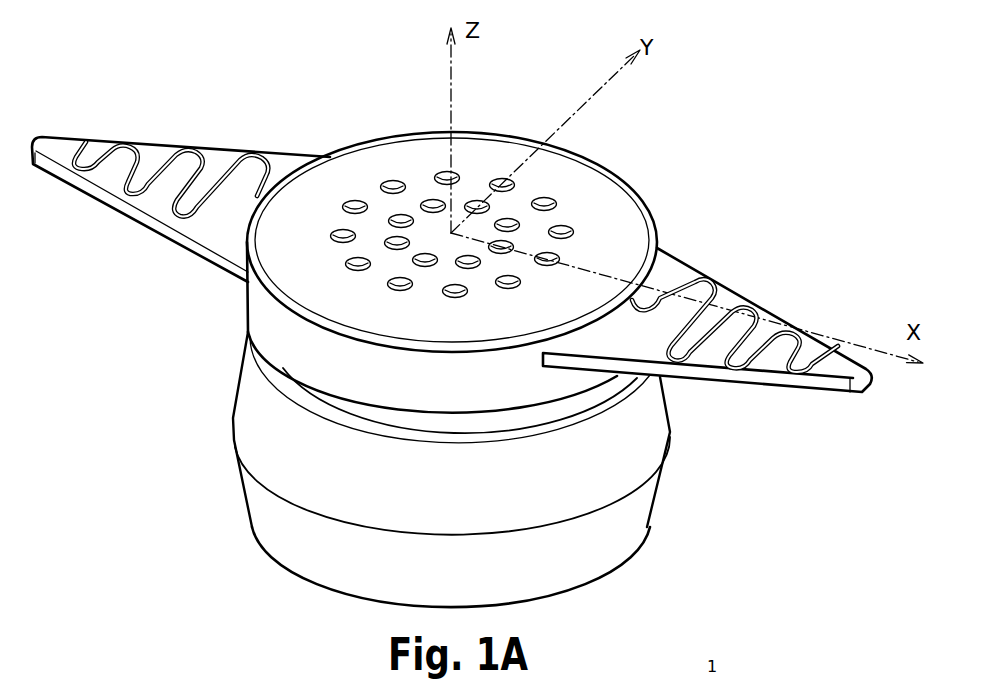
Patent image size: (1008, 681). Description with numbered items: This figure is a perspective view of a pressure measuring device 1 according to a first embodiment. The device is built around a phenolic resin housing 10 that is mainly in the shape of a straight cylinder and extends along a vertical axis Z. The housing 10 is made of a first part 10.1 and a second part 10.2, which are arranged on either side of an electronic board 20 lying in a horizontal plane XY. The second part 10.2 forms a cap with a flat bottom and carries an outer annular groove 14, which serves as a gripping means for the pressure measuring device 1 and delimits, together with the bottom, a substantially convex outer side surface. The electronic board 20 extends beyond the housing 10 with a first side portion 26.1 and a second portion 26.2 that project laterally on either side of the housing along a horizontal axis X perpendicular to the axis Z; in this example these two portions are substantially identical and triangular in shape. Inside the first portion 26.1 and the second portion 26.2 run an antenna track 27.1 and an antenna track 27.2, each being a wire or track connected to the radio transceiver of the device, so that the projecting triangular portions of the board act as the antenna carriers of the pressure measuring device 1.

The pressure measuring device 1 is at (757, 115).
The housing 10 is at (495, 147).
The first part 10.1 is at (372, 148).
The second part 10.2 is at (290, 543).
The outer annular groove 14 is at (262, 318).
The electronic board 20 is at (713, 295).
The first side portion 26.1 is at (775, 317).
The second portion 26.2 is at (107, 148).
The antenna track 27.1 is at (807, 320).
The antenna track 27.2 is at (228, 177).